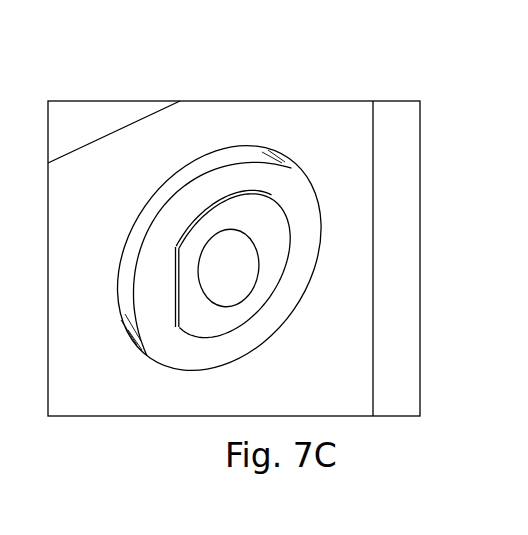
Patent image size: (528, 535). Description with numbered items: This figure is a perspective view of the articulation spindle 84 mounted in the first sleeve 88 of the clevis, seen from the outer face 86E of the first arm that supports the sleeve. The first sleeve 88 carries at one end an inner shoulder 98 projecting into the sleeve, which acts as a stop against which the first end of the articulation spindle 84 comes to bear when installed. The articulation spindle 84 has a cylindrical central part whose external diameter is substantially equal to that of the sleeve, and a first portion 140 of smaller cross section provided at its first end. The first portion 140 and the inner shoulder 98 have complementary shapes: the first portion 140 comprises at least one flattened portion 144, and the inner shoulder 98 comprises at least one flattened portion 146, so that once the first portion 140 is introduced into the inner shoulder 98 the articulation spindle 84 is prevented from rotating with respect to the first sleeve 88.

The outer face 86E is at (330, 125).
The articulation spindle 84 is at (268, 320).
The inner shoulder 98 is at (305, 257).
The first sleeve 88 is at (297, 201).
The flattened portion 144 is at (172, 327).
The flattened portion 146 is at (175, 250).
The first portion 140 is at (205, 322).